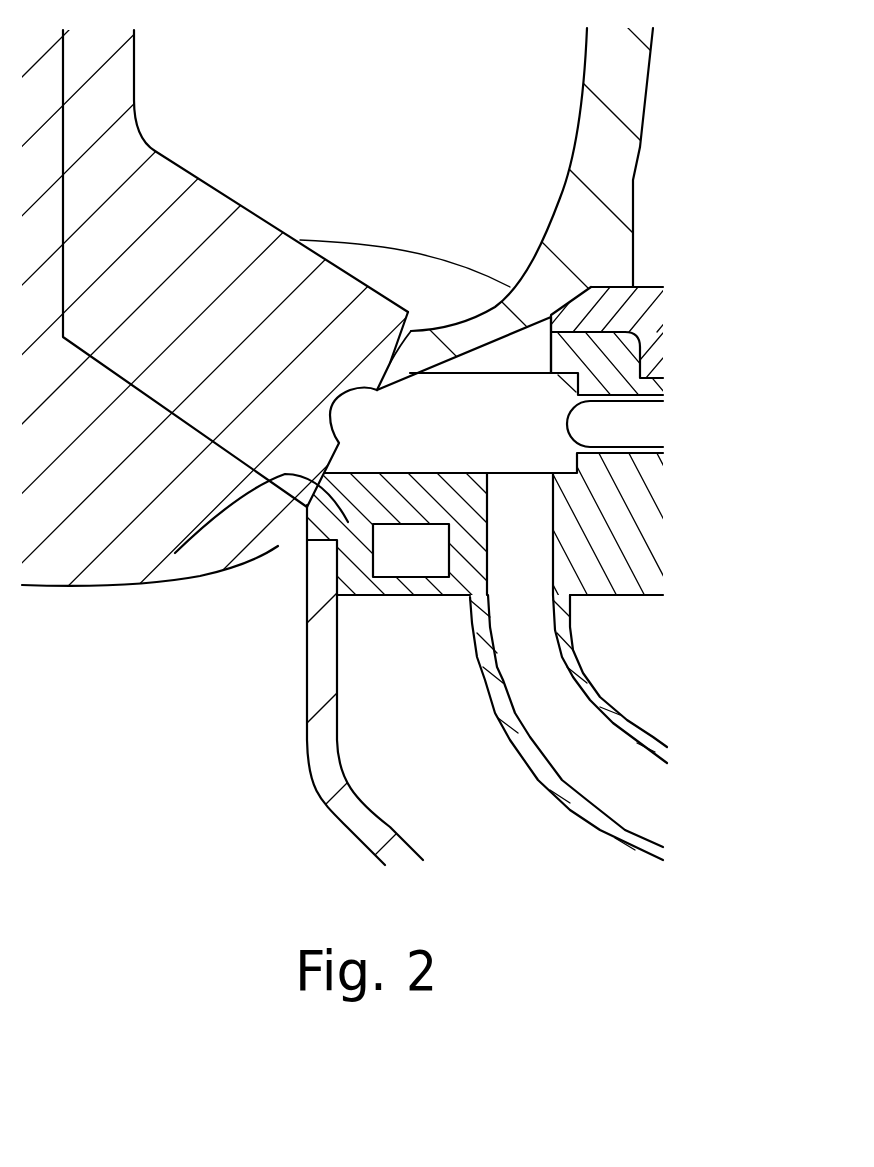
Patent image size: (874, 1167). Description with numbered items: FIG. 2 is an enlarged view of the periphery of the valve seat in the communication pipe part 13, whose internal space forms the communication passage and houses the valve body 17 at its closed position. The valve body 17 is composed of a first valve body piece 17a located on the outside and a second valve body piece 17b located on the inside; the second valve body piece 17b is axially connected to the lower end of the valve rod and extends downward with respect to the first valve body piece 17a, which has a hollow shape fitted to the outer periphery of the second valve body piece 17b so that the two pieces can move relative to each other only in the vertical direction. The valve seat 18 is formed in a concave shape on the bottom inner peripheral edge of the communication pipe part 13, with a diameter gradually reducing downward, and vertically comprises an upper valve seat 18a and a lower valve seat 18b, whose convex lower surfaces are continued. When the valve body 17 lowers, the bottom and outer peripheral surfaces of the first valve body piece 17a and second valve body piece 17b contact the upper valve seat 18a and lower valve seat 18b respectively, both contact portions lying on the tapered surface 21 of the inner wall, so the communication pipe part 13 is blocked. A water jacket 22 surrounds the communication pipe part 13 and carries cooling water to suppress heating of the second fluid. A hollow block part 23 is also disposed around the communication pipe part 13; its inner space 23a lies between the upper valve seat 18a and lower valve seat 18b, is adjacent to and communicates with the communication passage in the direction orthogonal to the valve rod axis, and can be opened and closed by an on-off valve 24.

The communication pipe part 13 is at (318, 517).
The valve body 17 is at (437, 356).
The first valve body piece 17a is at (165, 188).
The second valve body piece 17b is at (130, 553).
The valve seat 18 is at (443, 327).
The upper valve seat 18a is at (390, 363).
The lower valve seat 18b is at (270, 472).
The tapered surface 21 is at (411, 331).
The water jacket 22 is at (413, 567).
The hollow block part 23 is at (630, 577).
The inner space 23a is at (541, 455).
The on-off valve 24 is at (638, 422).